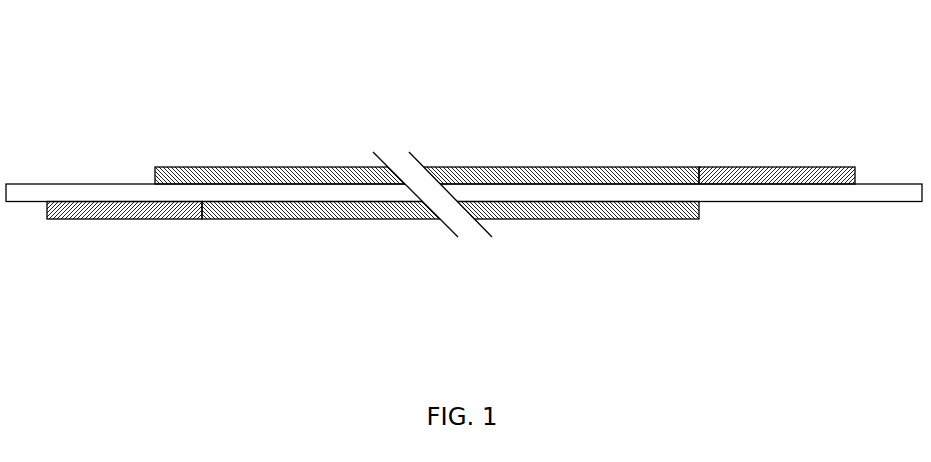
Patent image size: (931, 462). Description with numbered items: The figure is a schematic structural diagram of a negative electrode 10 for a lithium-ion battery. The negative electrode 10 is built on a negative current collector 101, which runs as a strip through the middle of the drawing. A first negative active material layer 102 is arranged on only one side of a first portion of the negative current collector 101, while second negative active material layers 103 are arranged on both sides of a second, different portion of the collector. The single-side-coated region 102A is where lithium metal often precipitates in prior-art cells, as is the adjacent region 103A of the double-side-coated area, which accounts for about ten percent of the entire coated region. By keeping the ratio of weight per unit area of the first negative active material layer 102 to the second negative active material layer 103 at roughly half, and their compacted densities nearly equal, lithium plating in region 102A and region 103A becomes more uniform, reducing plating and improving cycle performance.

The negative electrode 10 is at (465, 336).
The negative current collector 101 is at (88, 192).
The first negative active material layer 102 is at (165, 207).
The region of which one side is provided with a negative active material 102A is at (854, 192).
The second negative active material layer 103 is at (373, 170).
The region adjacent to the single-side region within the double-side-coated region 103A is at (268, 237).